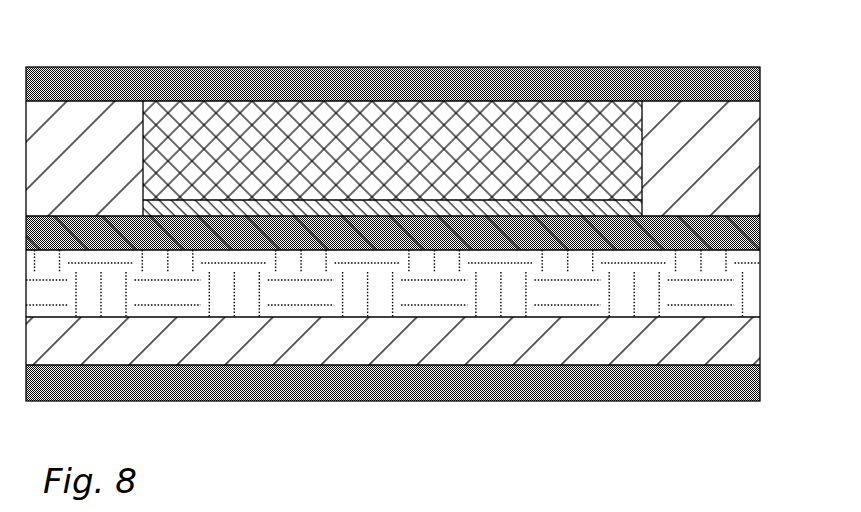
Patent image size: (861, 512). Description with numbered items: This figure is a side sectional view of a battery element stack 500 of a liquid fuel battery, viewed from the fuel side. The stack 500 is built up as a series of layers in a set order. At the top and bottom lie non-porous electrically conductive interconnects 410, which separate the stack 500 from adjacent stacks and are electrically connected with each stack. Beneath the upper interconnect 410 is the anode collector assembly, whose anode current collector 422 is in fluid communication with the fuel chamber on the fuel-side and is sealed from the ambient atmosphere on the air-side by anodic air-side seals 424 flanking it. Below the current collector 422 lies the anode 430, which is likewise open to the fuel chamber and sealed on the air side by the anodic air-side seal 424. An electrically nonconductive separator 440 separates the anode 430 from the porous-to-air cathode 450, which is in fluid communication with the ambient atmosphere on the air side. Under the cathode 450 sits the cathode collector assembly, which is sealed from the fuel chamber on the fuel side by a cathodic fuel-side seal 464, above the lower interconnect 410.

The battery element stack 500 is at (704, 41).
The interconnect 410 is at (72, 83).
The anode current collector 422 is at (233, 148).
The anodic air-side seal 424 is at (112, 152).
The anode 430 is at (320, 208).
The separator 440 is at (712, 230).
The cathode 450 is at (712, 280).
The cathodic fuel-side seal 464 is at (712, 342).